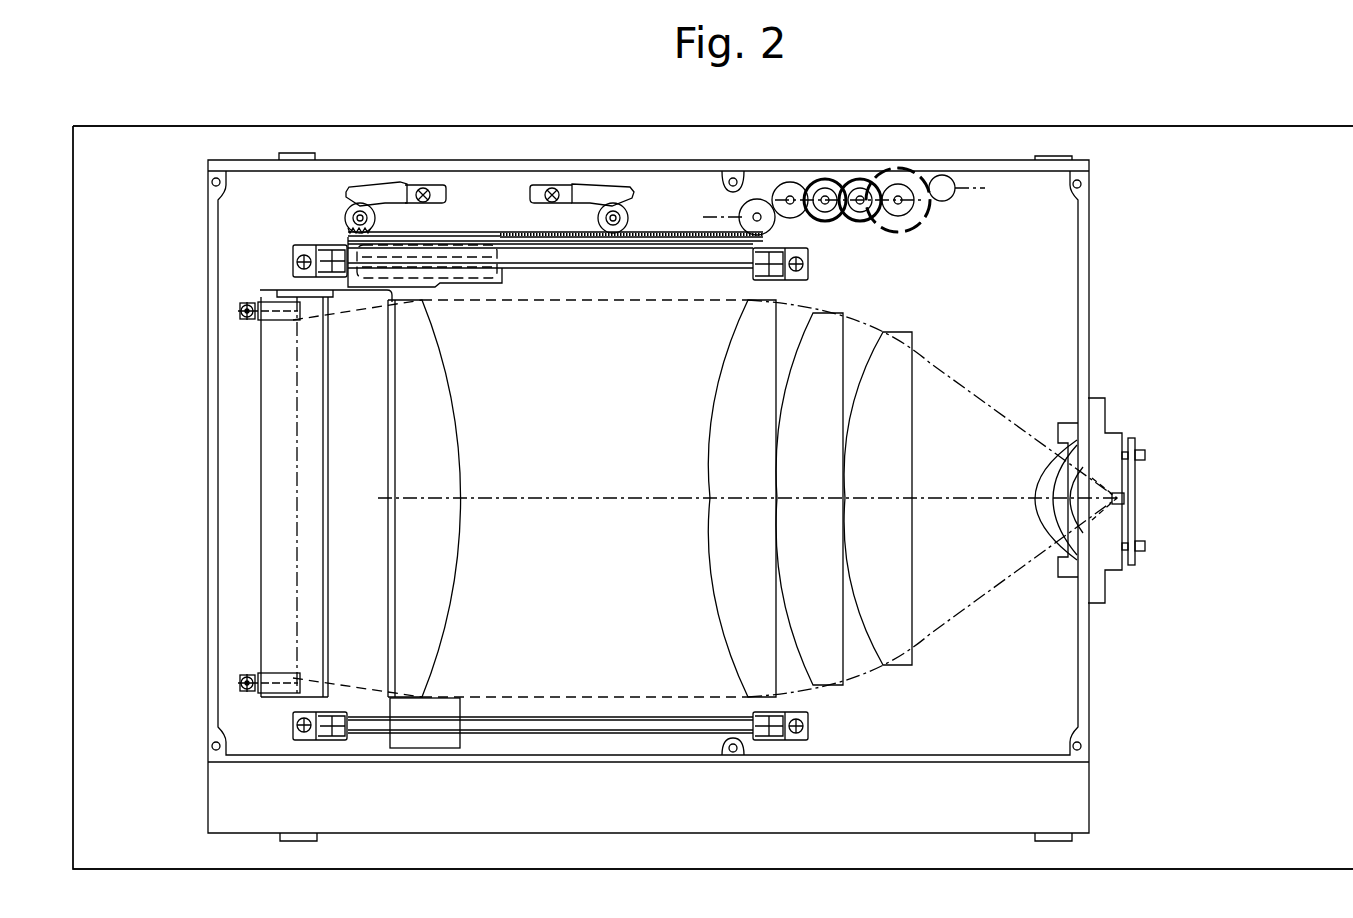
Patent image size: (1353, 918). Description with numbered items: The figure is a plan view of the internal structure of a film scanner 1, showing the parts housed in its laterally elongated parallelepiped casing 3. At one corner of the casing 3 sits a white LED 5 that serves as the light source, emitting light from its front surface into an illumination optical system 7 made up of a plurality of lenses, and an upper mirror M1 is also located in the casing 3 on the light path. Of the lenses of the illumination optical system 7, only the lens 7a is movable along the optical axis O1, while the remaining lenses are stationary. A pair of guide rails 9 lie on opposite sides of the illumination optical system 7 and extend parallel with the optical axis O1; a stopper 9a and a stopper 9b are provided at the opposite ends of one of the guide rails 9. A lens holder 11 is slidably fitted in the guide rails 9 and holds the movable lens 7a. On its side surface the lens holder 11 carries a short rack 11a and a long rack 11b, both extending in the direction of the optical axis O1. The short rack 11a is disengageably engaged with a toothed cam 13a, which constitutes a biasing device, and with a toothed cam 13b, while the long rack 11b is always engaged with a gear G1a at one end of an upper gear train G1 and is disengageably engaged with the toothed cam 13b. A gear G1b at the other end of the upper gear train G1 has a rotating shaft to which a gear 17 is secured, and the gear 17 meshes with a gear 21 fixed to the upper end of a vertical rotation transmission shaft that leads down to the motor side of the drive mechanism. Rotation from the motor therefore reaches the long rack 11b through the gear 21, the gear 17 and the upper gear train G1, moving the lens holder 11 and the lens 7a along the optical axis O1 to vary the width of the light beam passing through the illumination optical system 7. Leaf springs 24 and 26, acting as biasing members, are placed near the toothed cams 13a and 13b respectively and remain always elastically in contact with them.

The film scanner 1 is at (455, 118).
The casing 3 is at (1003, 126).
The white LED 5 is at (1133, 508).
The illumination optical system 7 is at (907, 313).
The movable lens 7a is at (440, 440).
The guide rails 9 is at (560, 260).
The stopper 9a is at (347, 248).
The stopper 9b is at (753, 278).
The lens holder 11 is at (498, 282).
The short rack 11a is at (380, 227).
The long rack 11b is at (658, 231).
The cam with a gear 13a is at (347, 210).
The cam with a gear 13b is at (630, 233).
The gear 17 is at (922, 228).
The gear 21 is at (958, 174).
The leaf spring 24 is at (377, 185).
The leaf spring 26 is at (588, 185).
The upper gear train G1 is at (801, 209).
The gear G1a is at (740, 217).
The gear G1b is at (903, 182).
The upper mirror M1 is at (273, 488).
The optical axis O1 is at (697, 498).